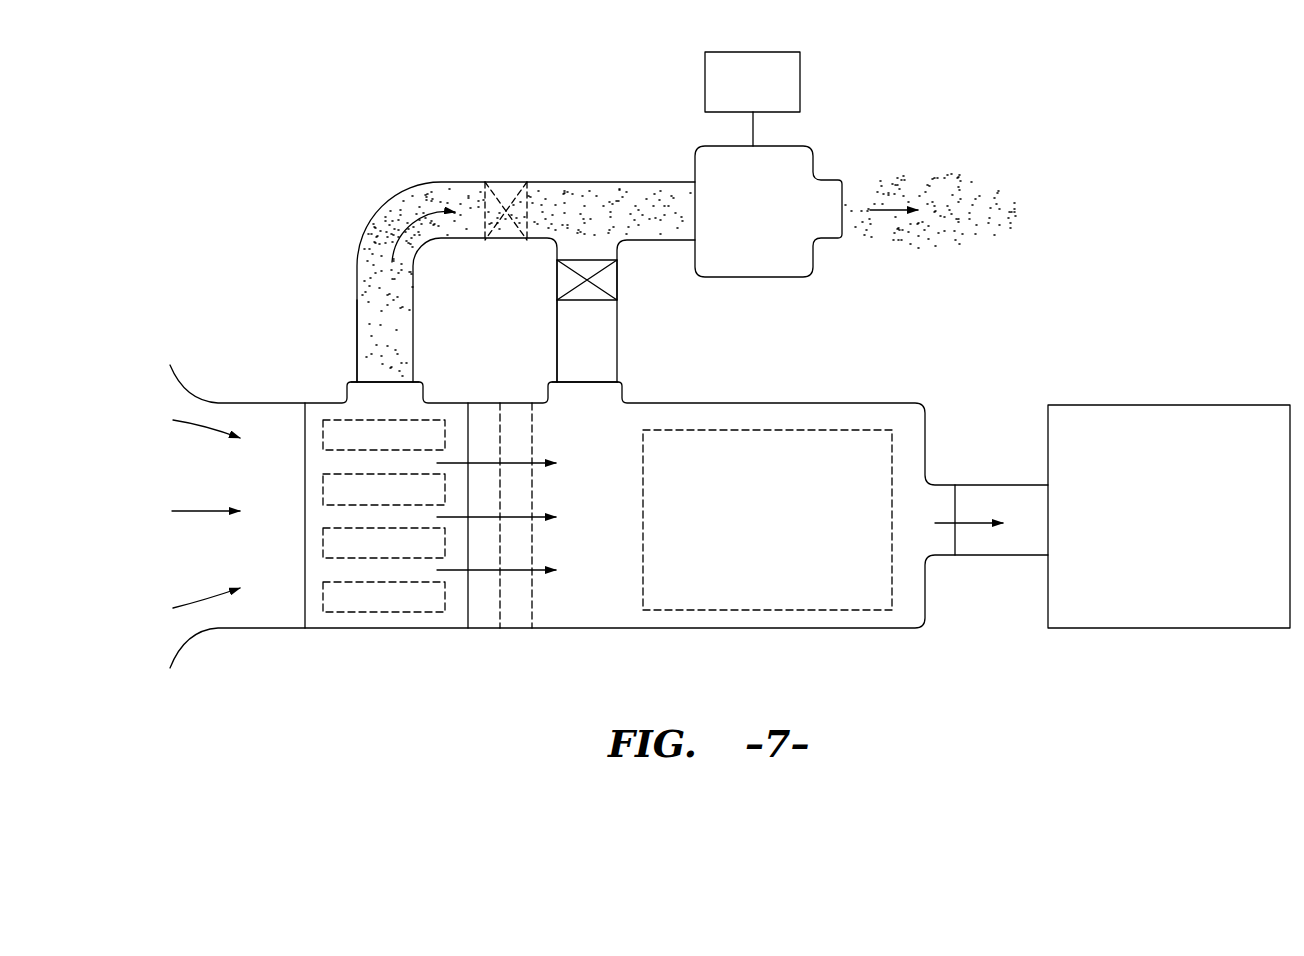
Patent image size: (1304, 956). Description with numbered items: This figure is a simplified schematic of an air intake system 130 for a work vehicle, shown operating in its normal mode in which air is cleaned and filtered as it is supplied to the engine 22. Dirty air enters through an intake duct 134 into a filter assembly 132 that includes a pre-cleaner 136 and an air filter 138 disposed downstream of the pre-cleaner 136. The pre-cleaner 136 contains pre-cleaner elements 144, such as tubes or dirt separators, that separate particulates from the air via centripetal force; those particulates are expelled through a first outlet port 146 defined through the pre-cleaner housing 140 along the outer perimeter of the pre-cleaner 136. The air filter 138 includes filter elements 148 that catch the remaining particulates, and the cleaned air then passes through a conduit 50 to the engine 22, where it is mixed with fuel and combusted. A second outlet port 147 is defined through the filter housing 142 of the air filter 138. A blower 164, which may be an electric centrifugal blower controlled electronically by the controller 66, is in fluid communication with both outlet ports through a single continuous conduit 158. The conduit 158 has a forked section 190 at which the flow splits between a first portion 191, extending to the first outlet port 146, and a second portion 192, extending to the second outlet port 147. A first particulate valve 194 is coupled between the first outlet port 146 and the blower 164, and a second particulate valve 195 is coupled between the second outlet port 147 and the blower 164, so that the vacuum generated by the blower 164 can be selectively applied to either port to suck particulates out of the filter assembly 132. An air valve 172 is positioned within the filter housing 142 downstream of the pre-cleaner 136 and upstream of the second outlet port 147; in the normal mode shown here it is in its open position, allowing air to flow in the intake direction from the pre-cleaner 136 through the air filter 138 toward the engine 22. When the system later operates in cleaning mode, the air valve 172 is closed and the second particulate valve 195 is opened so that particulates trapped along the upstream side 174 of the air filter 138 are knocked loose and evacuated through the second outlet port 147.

The engine 22 is at (1158, 527).
The conduit 50 is at (962, 485).
The controller 66 is at (765, 97).
The air intake system 130 is at (281, 203).
The filter assembly 132 is at (734, 372).
The intake duct 134 is at (215, 400).
The pre-cleaner 136 is at (353, 624).
The air filter 138 is at (829, 622).
The pre-cleaner housing 140 is at (416, 630).
The filter housing 142 is at (695, 630).
The pre-cleaner elements 144 is at (323, 478).
The first outlet port 146 is at (424, 390).
The second outlet port 147 is at (625, 390).
The filter elements 148 is at (790, 430).
The conduit 158 is at (415, 180).
The blower 164 is at (732, 225).
The air valve 172 is at (498, 418).
The upstream side 174 is at (642, 580).
The forked section 190 is at (548, 250).
The first portion 191 is at (357, 364).
The second portion 192 is at (556, 363).
The first particulate valve 194 is at (505, 185).
The second particulate valve 195 is at (617, 284).